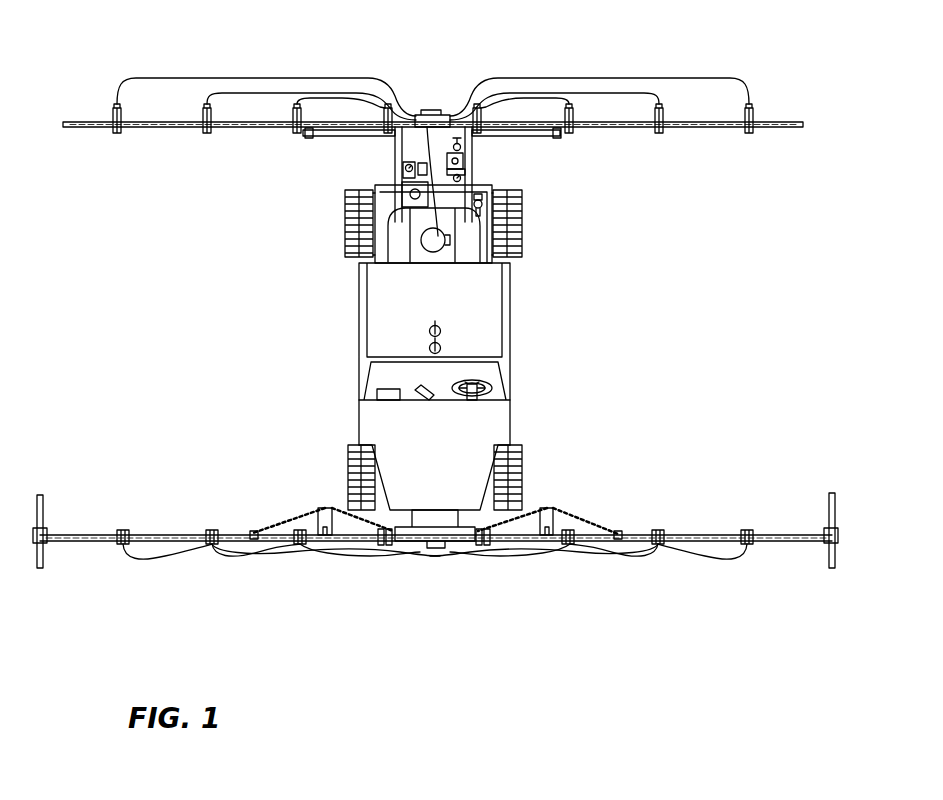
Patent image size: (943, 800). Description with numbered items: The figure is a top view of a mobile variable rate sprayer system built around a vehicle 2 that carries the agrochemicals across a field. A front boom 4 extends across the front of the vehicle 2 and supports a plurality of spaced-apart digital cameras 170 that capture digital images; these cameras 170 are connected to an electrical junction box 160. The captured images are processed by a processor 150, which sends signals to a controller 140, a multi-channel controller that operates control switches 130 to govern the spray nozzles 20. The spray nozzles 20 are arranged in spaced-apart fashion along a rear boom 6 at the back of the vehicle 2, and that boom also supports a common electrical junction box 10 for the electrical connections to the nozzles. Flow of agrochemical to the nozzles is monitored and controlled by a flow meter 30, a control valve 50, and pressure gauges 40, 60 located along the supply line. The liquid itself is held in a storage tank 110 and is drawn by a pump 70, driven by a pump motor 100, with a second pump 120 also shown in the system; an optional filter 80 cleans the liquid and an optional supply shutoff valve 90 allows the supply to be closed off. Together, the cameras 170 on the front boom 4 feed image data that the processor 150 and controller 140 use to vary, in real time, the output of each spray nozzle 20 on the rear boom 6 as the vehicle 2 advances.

The vehicle 2 is at (357, 361).
The front boom 4 is at (103, 525).
The rear boom 6 is at (96, 100).
The common electrical junction box 10 is at (428, 116).
The spray nozzles 20 is at (655, 106).
The flow meter 30 is at (403, 168).
The pressure gauge 40 is at (453, 146).
The control valve 50 is at (463, 160).
The pressure gauge 60 is at (461, 178).
The pump 70 is at (470, 165).
The filter 80 is at (483, 202).
The supply shutoff valve 90 is at (483, 210).
The pump motor 100 is at (402, 186).
The storage tank 110 is at (400, 254).
The pump 120 is at (432, 236).
The control switches 130 is at (429, 348).
The controller 140 is at (423, 399).
The processor 150 is at (377, 395).
The electrical junction box 160 is at (437, 546).
The digital camera 170 is at (657, 532).